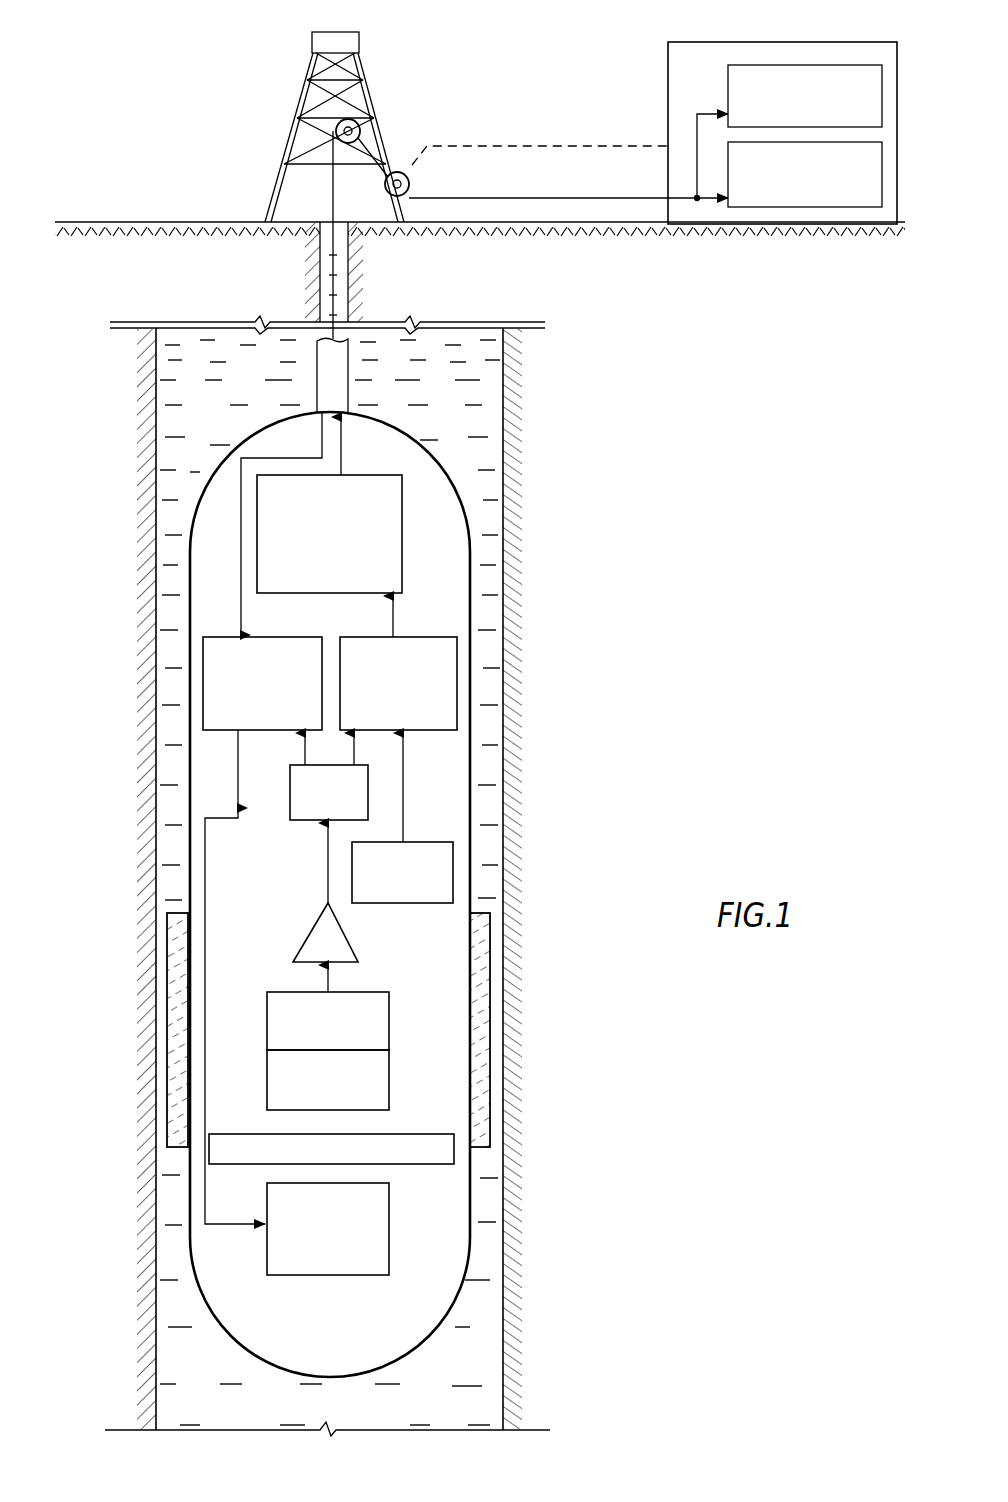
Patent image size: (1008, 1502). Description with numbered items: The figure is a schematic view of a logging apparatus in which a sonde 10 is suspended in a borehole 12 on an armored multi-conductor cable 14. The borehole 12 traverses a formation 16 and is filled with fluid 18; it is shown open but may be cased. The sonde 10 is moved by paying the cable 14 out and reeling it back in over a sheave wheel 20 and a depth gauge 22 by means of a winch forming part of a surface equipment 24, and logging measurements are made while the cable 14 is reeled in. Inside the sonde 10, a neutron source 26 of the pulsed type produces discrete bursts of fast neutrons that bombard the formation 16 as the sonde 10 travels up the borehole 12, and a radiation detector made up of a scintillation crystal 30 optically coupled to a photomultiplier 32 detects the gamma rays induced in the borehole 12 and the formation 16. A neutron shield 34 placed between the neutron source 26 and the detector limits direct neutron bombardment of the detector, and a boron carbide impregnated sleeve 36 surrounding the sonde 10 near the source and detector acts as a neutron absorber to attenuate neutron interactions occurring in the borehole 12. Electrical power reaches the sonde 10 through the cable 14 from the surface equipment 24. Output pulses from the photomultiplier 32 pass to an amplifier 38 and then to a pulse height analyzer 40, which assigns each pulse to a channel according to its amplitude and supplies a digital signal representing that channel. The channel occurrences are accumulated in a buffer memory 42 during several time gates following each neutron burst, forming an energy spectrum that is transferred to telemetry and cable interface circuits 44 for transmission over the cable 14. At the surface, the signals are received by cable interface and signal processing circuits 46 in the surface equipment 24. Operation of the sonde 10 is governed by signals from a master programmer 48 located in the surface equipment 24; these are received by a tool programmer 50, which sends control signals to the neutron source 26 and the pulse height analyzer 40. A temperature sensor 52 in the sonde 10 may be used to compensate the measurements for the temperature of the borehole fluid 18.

The sonde 10 is at (470, 775).
The borehole 12 is at (472, 1327).
The armored multi-conductor cable 14 is at (333, 185).
The formation 16 is at (570, 1122).
The fluid 18 is at (453, 1397).
The sheave wheel 20 is at (337, 125).
The depth gauge 22 is at (400, 170).
The surface equipment 24 is at (693, 215).
The neutron source 26 is at (336, 1277).
The scintillation crystal 30 is at (389, 1080).
The photomultiplier 32 is at (389, 1022).
The neutron shield 34 is at (433, 1166).
The boron carbide impregnated sleeve 36 is at (478, 1030).
The amplifier 38 is at (352, 940).
The pulse height analyzer 40 is at (300, 822).
The buffer memory 42 is at (457, 680).
The telemetry and cable interface circuits 44 is at (402, 535).
The cable interface and signal processing circuits 46 is at (840, 240).
The master programmer 48 is at (728, 80).
The tool programmer 50 is at (203, 683).
The temperature sensor 52 is at (453, 862).